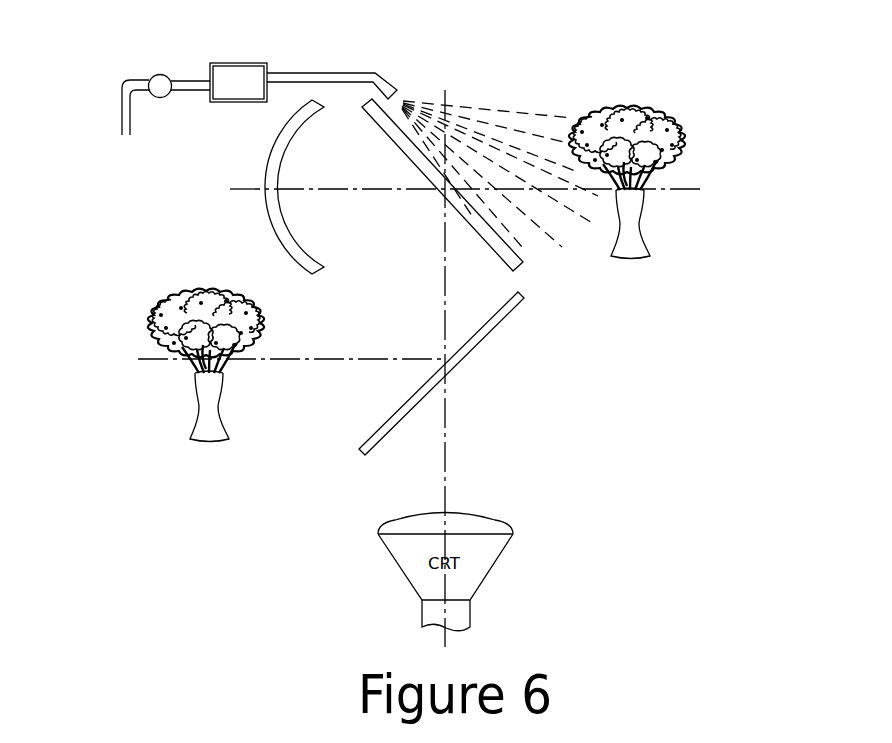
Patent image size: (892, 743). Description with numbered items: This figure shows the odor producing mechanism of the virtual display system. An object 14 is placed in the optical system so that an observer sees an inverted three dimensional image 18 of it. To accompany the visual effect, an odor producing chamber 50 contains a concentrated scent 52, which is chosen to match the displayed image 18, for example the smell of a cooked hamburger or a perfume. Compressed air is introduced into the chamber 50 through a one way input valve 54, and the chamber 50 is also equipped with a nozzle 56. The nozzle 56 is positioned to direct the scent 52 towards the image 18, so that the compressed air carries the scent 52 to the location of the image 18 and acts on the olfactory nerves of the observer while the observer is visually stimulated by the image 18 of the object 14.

The object 14 is at (185, 433).
The inverted three dimensional image 18 is at (652, 227).
The odor producing chamber 50 is at (270, 72).
The concentrated scent 52 is at (512, 113).
The one way input valve 54 is at (152, 80).
The nozzle 56 is at (376, 73).